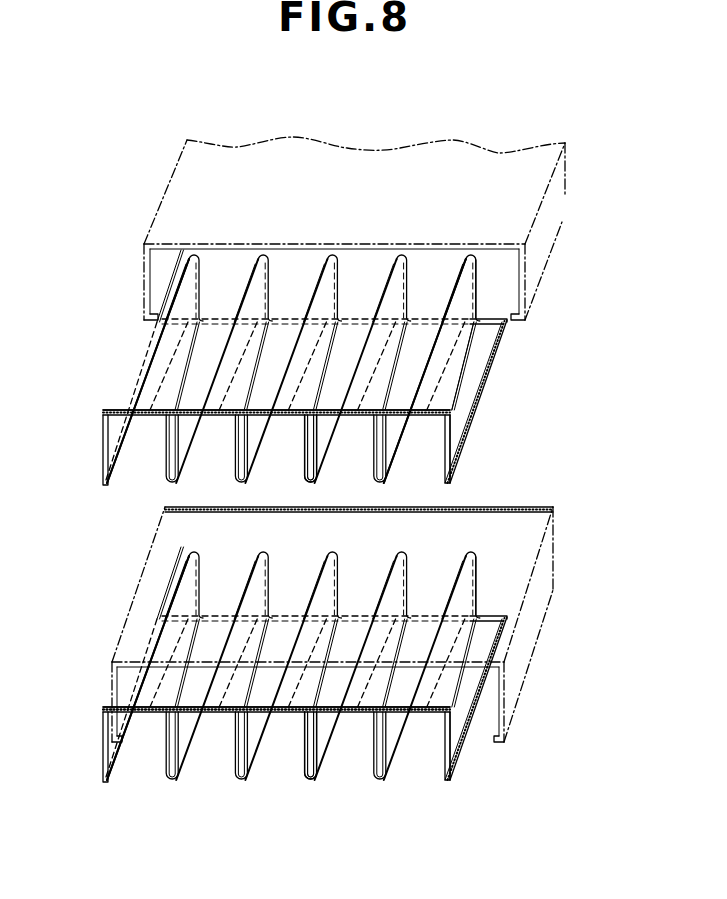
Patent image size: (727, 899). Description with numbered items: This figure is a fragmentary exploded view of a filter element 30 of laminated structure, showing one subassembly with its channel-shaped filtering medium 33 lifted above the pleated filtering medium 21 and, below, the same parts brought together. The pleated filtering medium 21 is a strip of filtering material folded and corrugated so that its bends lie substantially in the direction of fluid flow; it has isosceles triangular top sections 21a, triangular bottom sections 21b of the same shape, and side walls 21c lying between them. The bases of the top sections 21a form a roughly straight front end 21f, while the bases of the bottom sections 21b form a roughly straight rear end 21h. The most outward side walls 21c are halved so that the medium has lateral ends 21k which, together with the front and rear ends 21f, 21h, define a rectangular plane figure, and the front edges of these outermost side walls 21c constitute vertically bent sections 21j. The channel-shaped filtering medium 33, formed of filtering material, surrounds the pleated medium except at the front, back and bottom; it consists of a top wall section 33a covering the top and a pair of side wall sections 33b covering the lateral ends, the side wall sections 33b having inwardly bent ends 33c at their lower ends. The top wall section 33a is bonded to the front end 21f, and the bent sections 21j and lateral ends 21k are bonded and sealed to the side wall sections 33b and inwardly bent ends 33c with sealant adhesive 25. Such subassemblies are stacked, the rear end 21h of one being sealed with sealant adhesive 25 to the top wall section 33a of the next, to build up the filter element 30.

The filter element 30 is at (577, 163).
The channel-shaped filtering medium 33 is at (160, 177).
The top wall section 33a is at (457, 152).
The side wall sections 33b is at (147, 267).
The inwardly bent ends 33c is at (142, 323).
The pleated filtering medium 21 is at (126, 356).
The triangular top sections 21a is at (243, 287).
The triangular bottom sections 21b is at (420, 327).
The side walls 21c is at (465, 360).
The front end 21f is at (355, 424).
The rear end 21h is at (490, 320).
The vertically bent sections 21j is at (452, 430).
The lateral ends 21k is at (137, 393).
The sealant adhesive 25 is at (425, 403).